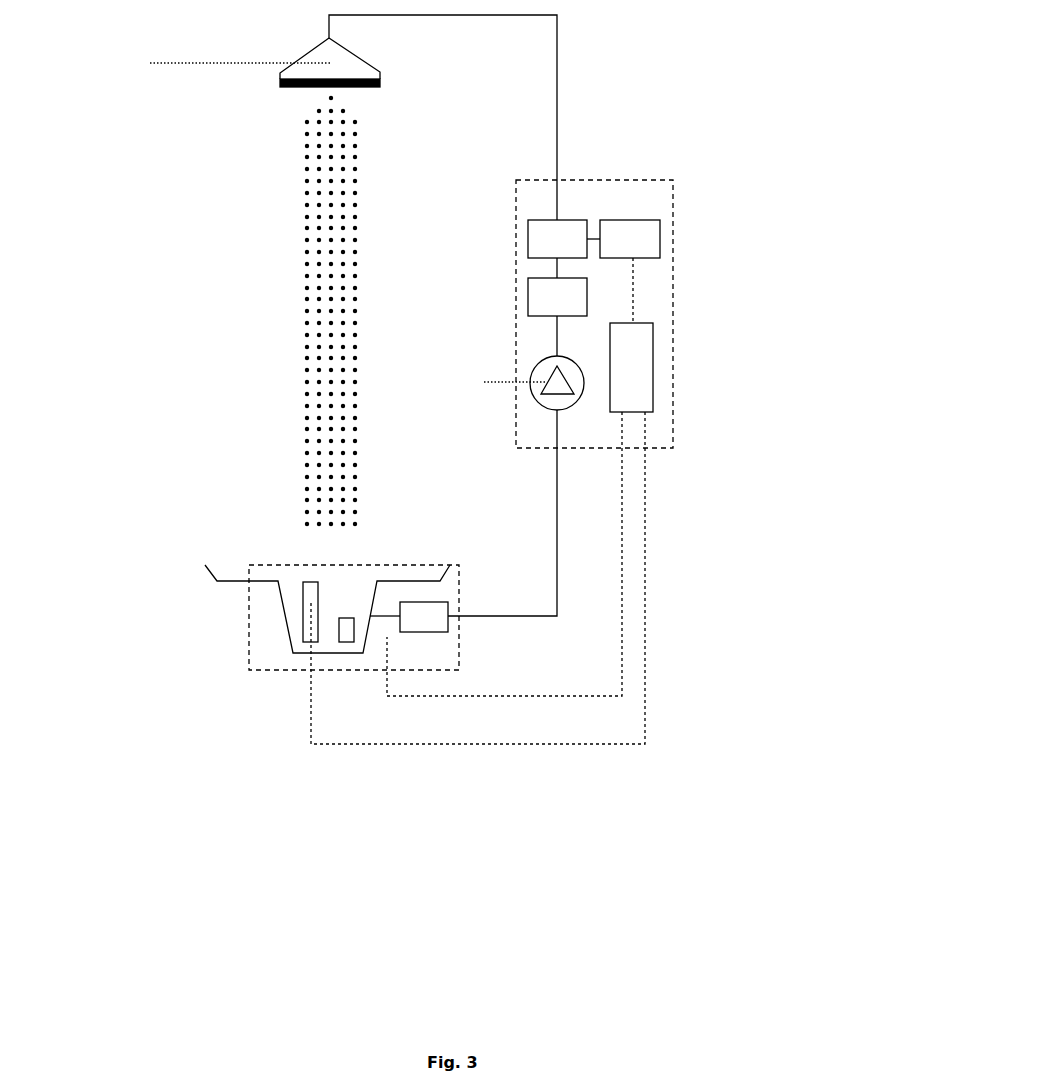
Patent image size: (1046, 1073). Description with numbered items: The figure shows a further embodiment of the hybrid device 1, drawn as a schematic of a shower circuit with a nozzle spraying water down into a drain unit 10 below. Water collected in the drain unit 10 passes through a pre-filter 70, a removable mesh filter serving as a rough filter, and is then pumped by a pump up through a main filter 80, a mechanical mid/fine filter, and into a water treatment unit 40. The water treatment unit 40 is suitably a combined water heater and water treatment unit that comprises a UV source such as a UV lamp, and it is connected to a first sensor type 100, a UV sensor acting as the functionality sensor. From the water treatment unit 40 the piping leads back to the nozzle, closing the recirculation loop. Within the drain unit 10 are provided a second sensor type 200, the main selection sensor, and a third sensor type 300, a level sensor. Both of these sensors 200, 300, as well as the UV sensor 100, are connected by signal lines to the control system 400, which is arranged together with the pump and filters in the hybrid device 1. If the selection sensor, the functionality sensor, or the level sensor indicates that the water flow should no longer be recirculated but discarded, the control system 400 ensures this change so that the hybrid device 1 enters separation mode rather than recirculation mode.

The hybrid device 1 is at (228, 291).
The drain unit 10 is at (271, 613).
The water treatment unit 40 is at (558, 240).
The pre-filter 70 is at (423, 618).
The main filter 80 is at (558, 297).
The first sensor type 100 is at (634, 239).
The second sensor type 200 is at (347, 630).
The third sensor type 300 is at (387, 637).
The control system 400 is at (634, 368).